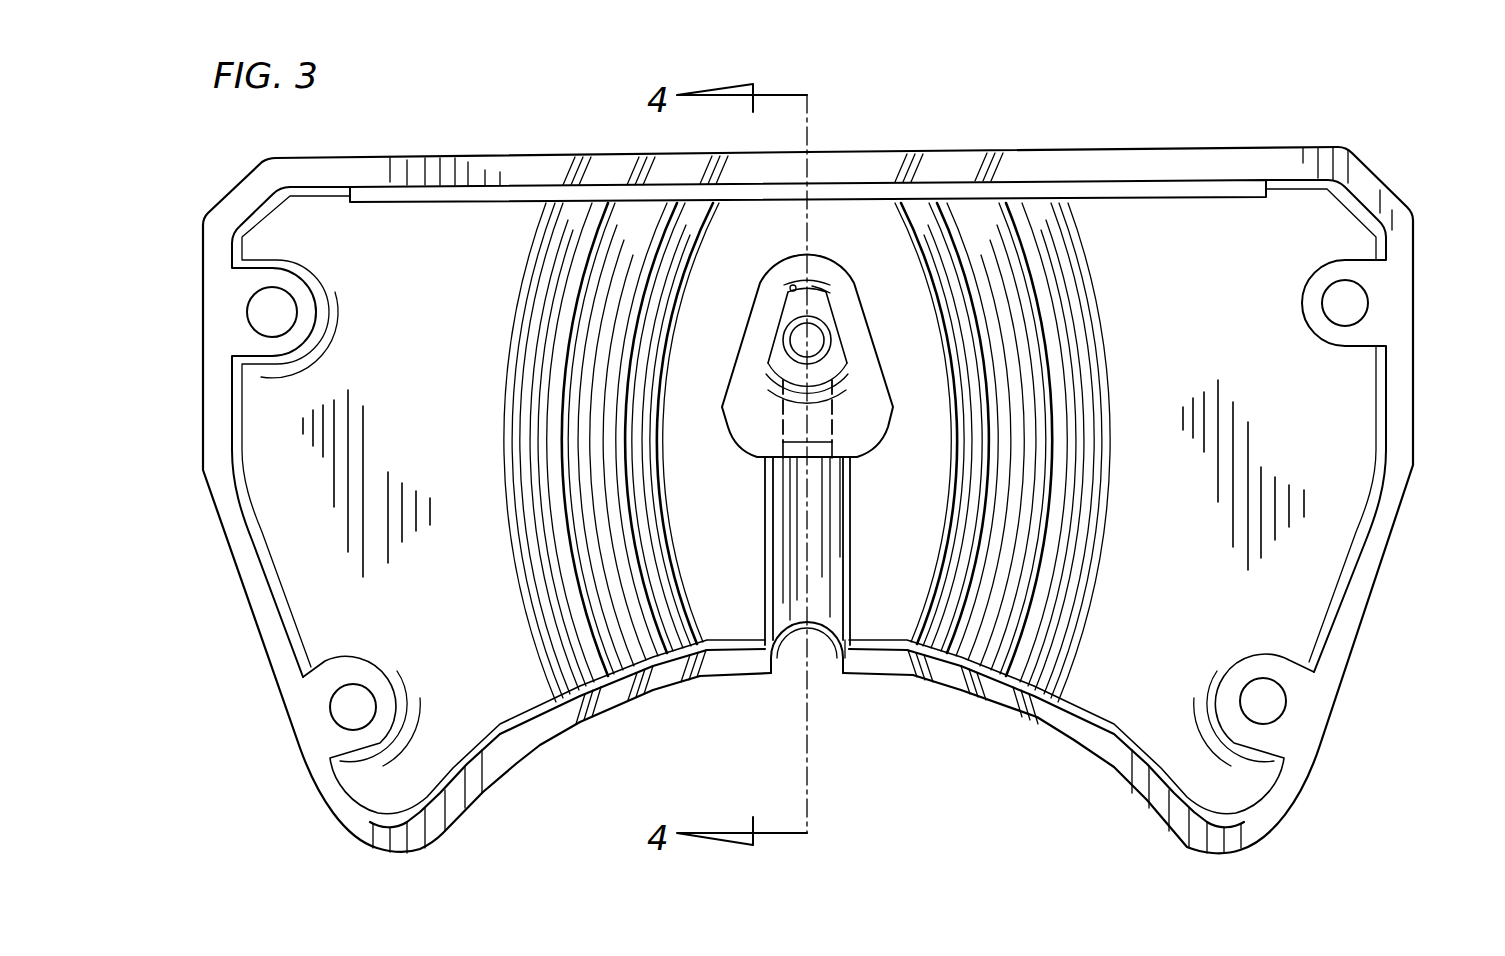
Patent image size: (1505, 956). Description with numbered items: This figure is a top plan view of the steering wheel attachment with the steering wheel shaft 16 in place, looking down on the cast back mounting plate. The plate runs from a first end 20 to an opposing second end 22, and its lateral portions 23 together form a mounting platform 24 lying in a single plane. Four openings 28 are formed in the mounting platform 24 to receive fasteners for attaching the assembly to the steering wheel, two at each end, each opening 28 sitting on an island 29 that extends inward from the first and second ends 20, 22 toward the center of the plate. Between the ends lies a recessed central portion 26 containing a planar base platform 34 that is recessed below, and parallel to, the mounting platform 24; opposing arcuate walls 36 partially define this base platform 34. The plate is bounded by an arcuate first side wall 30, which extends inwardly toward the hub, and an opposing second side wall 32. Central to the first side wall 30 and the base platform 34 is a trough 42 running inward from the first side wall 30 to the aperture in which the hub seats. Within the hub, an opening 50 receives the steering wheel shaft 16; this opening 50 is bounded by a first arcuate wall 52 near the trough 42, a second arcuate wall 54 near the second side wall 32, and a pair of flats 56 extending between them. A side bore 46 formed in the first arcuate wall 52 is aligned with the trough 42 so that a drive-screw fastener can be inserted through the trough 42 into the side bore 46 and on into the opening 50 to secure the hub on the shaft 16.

The steering wheel shaft 16 is at (790, 310).
The first end 20 is at (205, 470).
The second end 22 is at (1414, 460).
The lateral portions 23 is at (381, 248).
The mounting platform 24 is at (480, 686).
The recessed central portion 26 is at (727, 617).
The openings 28 is at (262, 313).
The island 29 is at (281, 272).
The first side wall 30 is at (865, 680).
The second side wall 32 is at (833, 151).
The base platform 34 is at (878, 606).
The arcuate walls 36 is at (742, 366).
The trough 42 is at (795, 612).
The side bore 46 is at (781, 430).
The opening 50 is at (792, 286).
The first arcuate wall 52 is at (767, 384).
The second arcuate wall 54 is at (821, 285).
The flats 56 is at (773, 340).